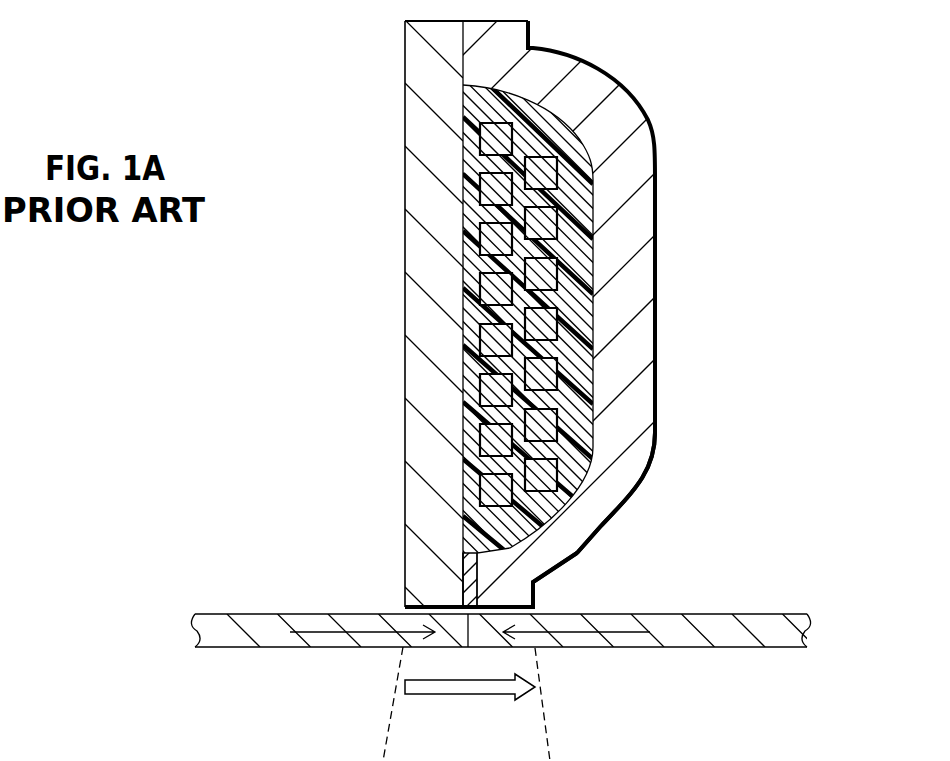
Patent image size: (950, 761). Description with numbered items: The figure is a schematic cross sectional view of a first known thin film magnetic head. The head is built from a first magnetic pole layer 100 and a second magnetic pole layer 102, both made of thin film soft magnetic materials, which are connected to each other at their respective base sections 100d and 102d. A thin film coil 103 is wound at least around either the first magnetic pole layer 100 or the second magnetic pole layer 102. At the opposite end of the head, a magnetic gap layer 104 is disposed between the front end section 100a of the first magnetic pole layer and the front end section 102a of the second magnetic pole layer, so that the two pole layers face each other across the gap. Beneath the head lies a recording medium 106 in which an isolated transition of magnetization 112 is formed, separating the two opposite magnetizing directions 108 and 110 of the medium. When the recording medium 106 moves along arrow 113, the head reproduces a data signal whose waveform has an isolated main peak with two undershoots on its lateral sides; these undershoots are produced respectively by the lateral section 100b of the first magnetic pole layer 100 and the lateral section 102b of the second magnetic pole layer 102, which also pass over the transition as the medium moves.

The first magnetic pole layer 100 is at (405, 292).
The front end section of the first magnetic pole layer 100a is at (463, 580).
The lateral section of the first magnetic pole layer 100b is at (405, 598).
The base section of the first magnetic pole layer 100d is at (418, 72).
The second magnetic pole layer 102 is at (637, 350).
The front end section of the second magnetic pole layer 102a is at (510, 592).
The lateral section of the second magnetic pole layer 102b is at (533, 590).
The base section of the second magnetic pole layer 102d is at (533, 46).
The thin film coil 103 is at (560, 285).
The magnetic gap layer 104 is at (465, 570).
The recording medium 106 is at (751, 640).
The magnetizing direction 108 is at (343, 648).
The magnetizing direction 110 is at (588, 635).
The isolated transition of magnetization 112 is at (468, 647).
The arrow indicating movement of the recording medium 113 is at (490, 696).